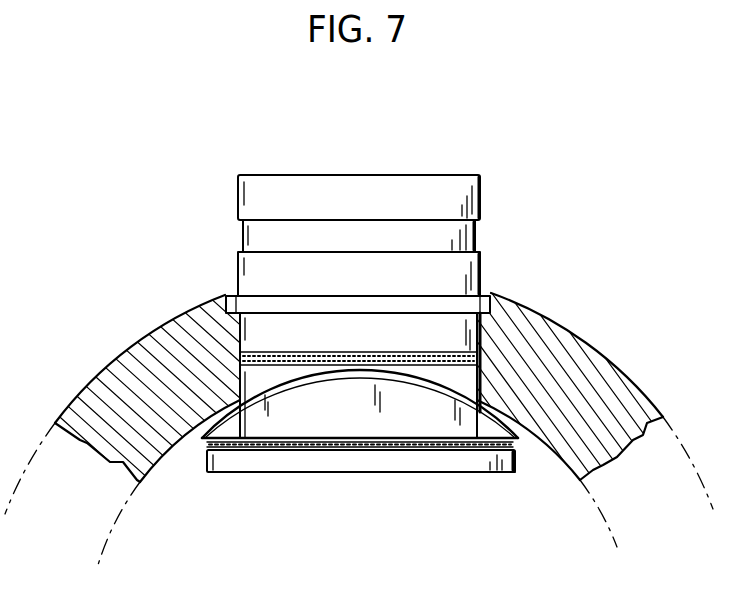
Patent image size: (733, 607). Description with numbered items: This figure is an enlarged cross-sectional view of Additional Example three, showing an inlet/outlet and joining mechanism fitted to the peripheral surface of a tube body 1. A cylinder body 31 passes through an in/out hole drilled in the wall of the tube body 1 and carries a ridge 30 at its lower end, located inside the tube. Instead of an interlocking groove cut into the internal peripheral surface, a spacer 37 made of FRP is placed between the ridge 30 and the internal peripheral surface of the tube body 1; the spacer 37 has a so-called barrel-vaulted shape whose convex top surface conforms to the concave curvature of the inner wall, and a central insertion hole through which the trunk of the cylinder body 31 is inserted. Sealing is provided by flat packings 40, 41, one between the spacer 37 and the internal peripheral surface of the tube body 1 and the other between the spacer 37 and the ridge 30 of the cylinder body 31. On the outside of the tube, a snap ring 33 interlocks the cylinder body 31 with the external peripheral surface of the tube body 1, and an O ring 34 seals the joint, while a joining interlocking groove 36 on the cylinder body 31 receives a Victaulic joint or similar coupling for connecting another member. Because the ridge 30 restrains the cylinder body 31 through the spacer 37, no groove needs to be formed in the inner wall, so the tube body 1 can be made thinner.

The tube body 1 is at (596, 347).
The ridge 30 is at (502, 480).
The cylinder body 31 is at (440, 183).
The snap ring 33 is at (492, 300).
The O ring 34 is at (462, 350).
The joining interlocking groove 36 is at (478, 221).
The spacer 37 is at (291, 425).
The flat packing 40 is at (398, 383).
The flat packing 41 is at (422, 452).